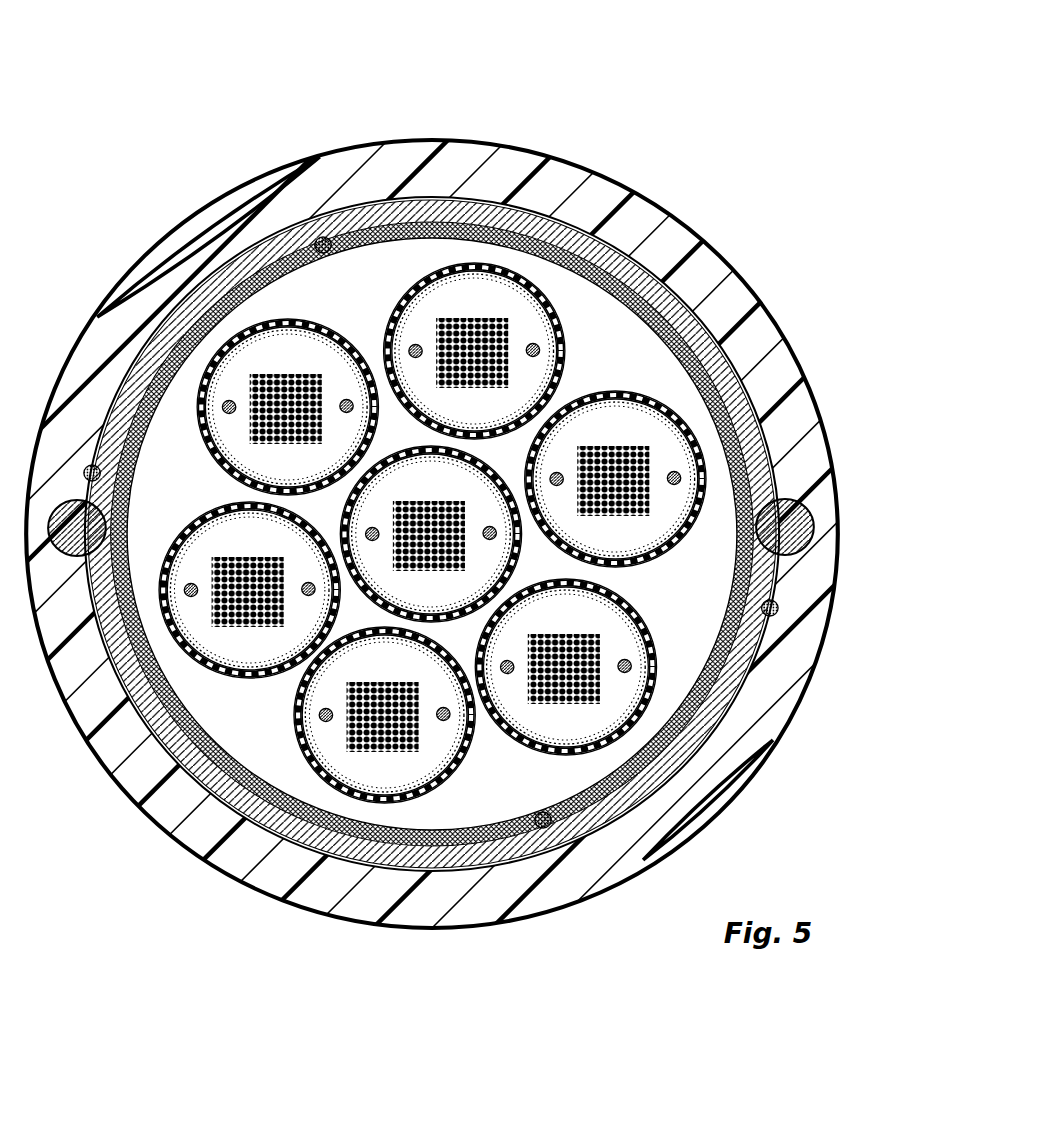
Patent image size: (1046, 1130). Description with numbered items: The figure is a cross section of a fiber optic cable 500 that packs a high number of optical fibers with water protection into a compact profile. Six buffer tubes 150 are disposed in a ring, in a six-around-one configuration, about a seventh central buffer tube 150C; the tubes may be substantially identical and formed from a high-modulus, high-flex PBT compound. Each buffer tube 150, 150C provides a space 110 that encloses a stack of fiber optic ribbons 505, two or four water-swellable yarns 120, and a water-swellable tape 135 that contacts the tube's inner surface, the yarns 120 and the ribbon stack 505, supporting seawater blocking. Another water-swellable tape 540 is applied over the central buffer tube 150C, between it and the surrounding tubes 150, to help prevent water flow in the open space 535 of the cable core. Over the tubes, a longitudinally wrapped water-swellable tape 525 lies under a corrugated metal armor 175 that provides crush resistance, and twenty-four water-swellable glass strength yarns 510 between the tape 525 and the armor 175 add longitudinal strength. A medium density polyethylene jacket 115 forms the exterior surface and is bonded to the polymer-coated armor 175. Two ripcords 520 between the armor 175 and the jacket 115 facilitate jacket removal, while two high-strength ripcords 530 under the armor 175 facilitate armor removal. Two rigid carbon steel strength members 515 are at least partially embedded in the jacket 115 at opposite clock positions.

The fiber optic cable 500 is at (690, 45).
The jacket 115 is at (498, 917).
The stack of fiber optic ribbons 505 is at (563, 265).
The water-swellable tape 540 is at (722, 642).
The open space 535 is at (338, 301).
The corrugated metal armor 175 is at (193, 302).
The water-swellable glass strength yarns 510 is at (680, 725).
The rigid strength members 515 is at (813, 528).
The water-swellable tape 525 is at (318, 240).
The ripcords 520 is at (777, 614).
The high-strength ripcords 530 is at (548, 826).
The space 110 is at (593, 543).
The buffer tubes 150 is at (557, 290).
The central buffer tube 150C is at (507, 457).
The water-swellable tape 135 is at (503, 325).
The water-swellable yarns 120 is at (417, 350).